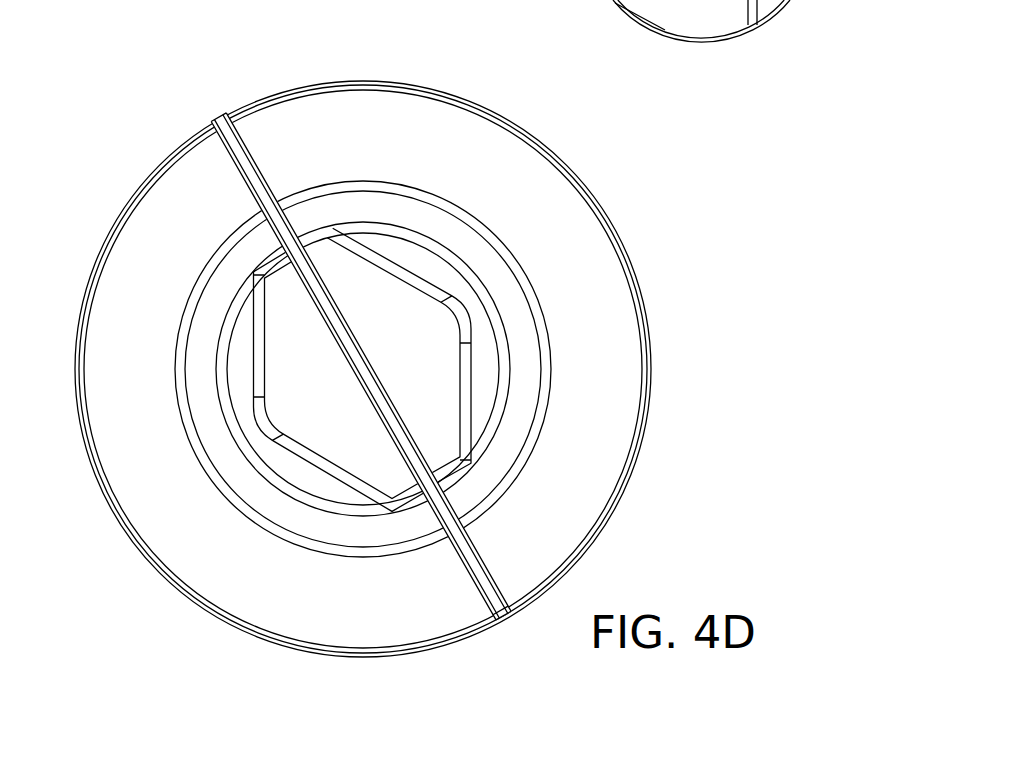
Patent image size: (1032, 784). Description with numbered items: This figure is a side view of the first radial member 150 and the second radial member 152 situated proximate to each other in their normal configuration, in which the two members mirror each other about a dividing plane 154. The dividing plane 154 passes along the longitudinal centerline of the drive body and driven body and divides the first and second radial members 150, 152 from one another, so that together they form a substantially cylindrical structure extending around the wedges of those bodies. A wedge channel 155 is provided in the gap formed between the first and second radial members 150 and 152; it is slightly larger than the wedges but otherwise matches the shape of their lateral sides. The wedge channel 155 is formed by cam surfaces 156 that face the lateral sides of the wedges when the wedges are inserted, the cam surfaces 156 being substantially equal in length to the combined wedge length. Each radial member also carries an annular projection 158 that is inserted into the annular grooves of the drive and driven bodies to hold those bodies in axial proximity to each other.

The first radial member 150 is at (602, 248).
The second radial member 152 is at (178, 552).
The dividing plane 154 is at (524, 651).
The wedge channel 155 is at (450, 355).
The cam surfaces 156 is at (373, 258).
The annular projection 158 is at (205, 353).